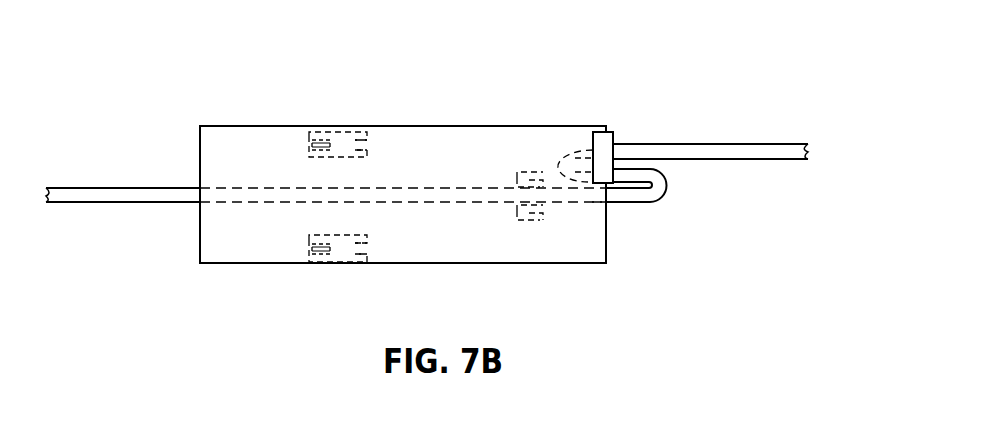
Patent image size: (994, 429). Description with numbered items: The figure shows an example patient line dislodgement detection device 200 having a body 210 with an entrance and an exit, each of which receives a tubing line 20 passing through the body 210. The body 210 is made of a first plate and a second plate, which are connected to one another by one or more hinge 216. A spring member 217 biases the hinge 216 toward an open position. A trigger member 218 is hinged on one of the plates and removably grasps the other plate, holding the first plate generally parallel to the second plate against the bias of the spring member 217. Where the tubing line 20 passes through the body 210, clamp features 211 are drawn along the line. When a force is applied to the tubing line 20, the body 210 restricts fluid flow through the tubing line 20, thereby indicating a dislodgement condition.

The patient line dislodgement detection device 200 is at (713, 80).
The tubing line 20 is at (753, 143).
The body 210 is at (563, 263).
The cable clamps 211 is at (545, 216).
The hinge 216 is at (308, 246).
The spring member 217 is at (367, 238).
The trigger member 218 is at (614, 135).